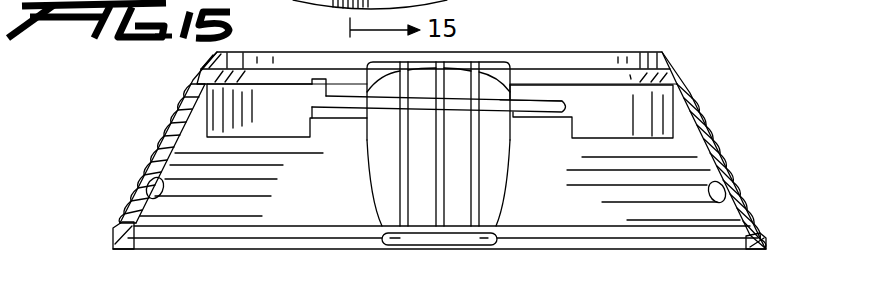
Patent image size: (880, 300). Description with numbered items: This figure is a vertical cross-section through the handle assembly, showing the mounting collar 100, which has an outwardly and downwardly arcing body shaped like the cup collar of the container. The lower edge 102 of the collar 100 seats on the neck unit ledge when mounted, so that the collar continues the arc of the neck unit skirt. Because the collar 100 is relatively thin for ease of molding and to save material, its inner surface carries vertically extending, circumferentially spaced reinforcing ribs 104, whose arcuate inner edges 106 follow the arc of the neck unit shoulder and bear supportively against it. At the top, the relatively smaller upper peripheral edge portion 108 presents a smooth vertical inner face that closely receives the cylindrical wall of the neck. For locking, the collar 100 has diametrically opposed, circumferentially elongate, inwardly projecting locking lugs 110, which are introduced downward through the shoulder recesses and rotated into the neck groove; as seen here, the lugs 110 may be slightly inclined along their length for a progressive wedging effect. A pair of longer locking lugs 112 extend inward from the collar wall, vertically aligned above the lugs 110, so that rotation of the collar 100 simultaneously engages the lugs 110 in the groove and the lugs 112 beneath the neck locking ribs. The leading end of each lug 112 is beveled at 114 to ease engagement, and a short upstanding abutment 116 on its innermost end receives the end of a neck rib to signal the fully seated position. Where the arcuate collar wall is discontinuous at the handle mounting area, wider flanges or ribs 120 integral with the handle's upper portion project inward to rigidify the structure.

The mounting collar 100 is at (104, 227).
The lower edge 102 is at (126, 249).
The reinforcing ribs 104 is at (172, 133).
The inner edges 106 is at (147, 193).
The upper peripheral edge portion 108 is at (613, 60).
The locking lugs 110 is at (402, 246).
The longer locking lugs 112 is at (522, 92).
The beveled leading end 114 is at (563, 104).
The upstanding abutment 116 is at (313, 96).
The flanges or ribs 120 is at (475, 177).